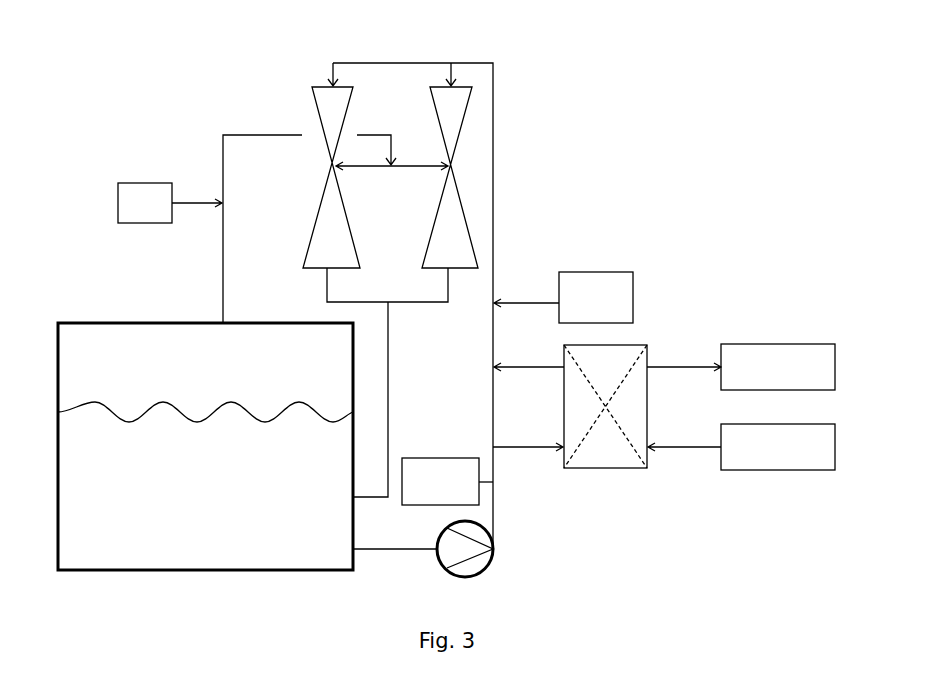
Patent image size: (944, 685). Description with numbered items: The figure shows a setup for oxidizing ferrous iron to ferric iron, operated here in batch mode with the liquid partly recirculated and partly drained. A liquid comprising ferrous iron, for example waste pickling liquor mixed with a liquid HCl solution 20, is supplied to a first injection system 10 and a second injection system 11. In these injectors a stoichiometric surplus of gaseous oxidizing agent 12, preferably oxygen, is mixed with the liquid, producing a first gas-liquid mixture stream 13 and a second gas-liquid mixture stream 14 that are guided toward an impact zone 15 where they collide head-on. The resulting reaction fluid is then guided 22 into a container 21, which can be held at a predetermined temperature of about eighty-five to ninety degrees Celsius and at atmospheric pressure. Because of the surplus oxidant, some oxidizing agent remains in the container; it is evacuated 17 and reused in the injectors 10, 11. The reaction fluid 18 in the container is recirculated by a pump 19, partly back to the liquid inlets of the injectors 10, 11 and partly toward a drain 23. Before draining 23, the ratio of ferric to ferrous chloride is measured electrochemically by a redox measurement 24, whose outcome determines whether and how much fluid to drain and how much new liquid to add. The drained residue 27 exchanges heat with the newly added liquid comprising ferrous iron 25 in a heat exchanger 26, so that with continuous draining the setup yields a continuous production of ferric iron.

The first injection system 10 is at (316, 106).
The second injection system 11 is at (463, 125).
The gaseous oxidizing agent 12 is at (131, 216).
The first gas-liquid mixture stream 13 is at (322, 279).
The second gas-liquid mixture stream 14 is at (448, 280).
The impact zone 15 is at (389, 305).
The evacuation of surplus oxidizing agent 17 is at (220, 322).
The reaction fluid 18 is at (94, 545).
The pump 19 is at (493, 549).
The liquid HCl solution 20 is at (582, 310).
The container 21 is at (127, 322).
The guiding of reaction fluid 22 is at (391, 421).
The drain 23 is at (497, 452).
The redox measurement 24 is at (426, 493).
The added new liquid comprising ferrous iron 25 is at (764, 460).
The heat exchanger 26 is at (600, 470).
The drained liquid residue 27 is at (764, 380).